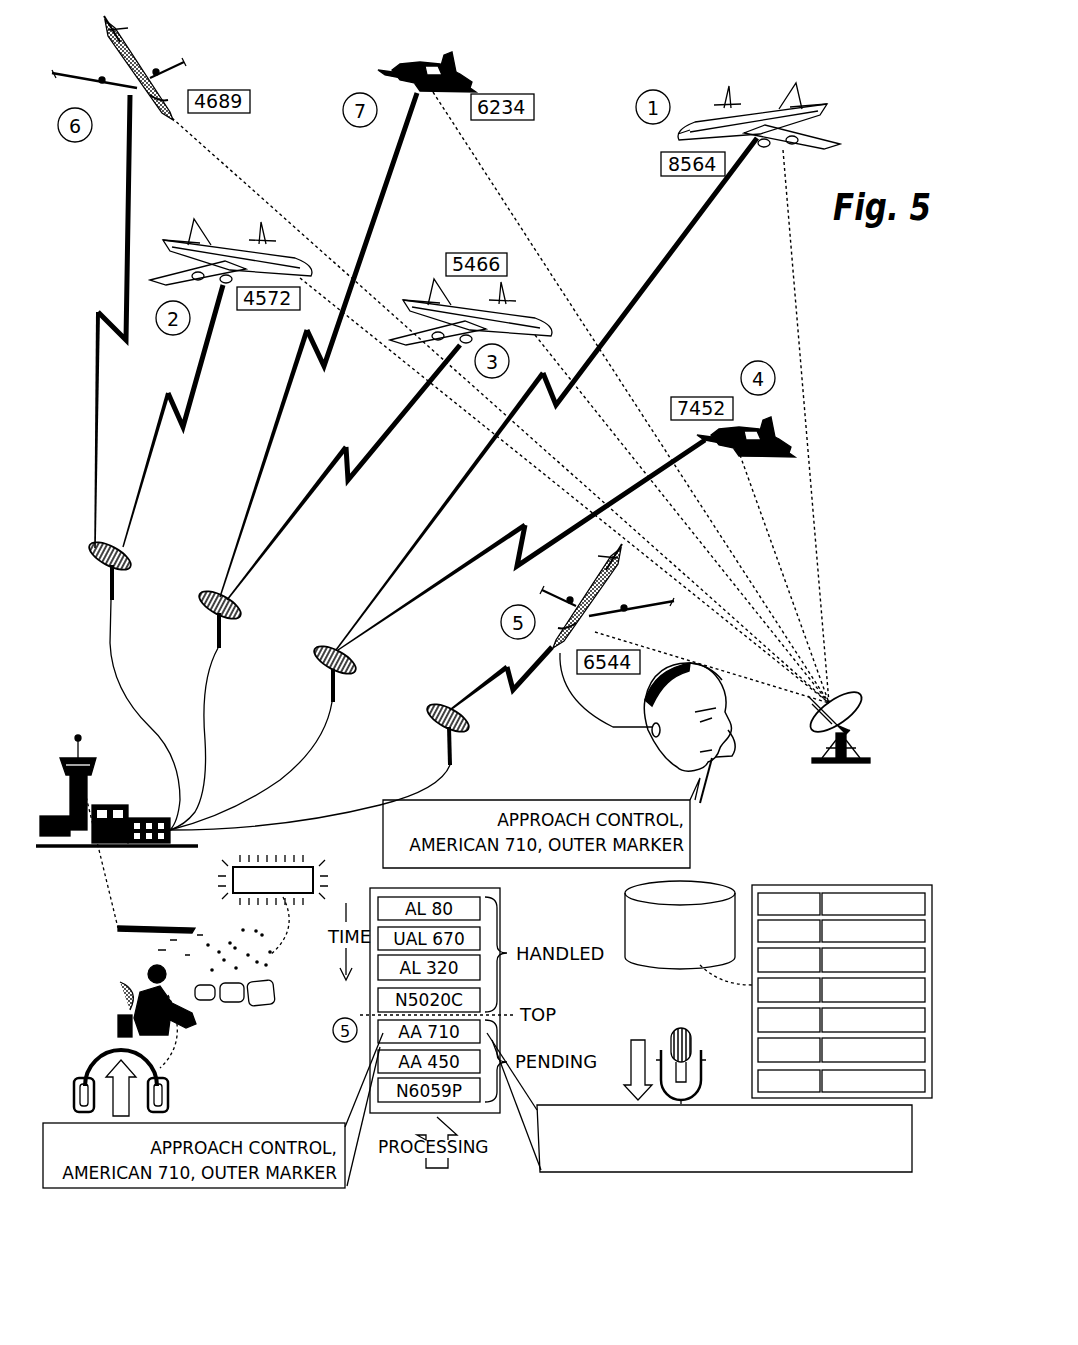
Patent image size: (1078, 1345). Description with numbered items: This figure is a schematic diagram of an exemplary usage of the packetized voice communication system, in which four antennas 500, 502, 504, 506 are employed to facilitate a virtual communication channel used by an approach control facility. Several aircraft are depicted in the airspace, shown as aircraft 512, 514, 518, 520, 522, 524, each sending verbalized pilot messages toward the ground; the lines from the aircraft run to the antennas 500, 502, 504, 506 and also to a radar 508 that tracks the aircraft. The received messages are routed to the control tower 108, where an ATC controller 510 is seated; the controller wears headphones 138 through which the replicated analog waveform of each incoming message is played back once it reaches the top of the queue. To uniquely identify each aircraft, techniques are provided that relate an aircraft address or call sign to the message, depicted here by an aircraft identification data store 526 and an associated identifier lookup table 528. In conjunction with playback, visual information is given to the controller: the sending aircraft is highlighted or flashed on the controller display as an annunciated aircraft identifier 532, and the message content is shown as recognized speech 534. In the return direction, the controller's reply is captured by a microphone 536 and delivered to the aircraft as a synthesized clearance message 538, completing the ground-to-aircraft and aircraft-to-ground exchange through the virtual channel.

The control tower 108 is at (124, 848).
The headphones 138 is at (170, 1086).
The radio receiver antenna 122.7 MHz 500 is at (137, 556).
The radio receiver antenna 124.3 MHz 502 is at (244, 606).
The radio receiver antenna 123.5 MHz 504 is at (355, 660).
The radio receiver antenna 121.7 MHz 506 is at (460, 708).
The radar 508 is at (860, 698).
The air traffic controller 510 is at (116, 992).
The aircraft 5 (AA 710) 512 is at (585, 595).
The aircraft 1 and 4 514 is at (746, 110).
The aircraft 3 518 is at (527, 318).
The aircraft 7 520 is at (427, 92).
The aircraft 2 522 is at (240, 255).
The aircraft 6 524 is at (133, 62).
The aircraft ID database 526 is at (710, 893).
The aircraft ID lookup table 528 is at (852, 885).
The annunciated aircraft identifier 532 is at (313, 855).
The speech recognition of transmission 534 is at (292, 971).
The speech synthesizer microphone 536 is at (678, 1030).
The synthesized clearance message 538 is at (806, 1174).